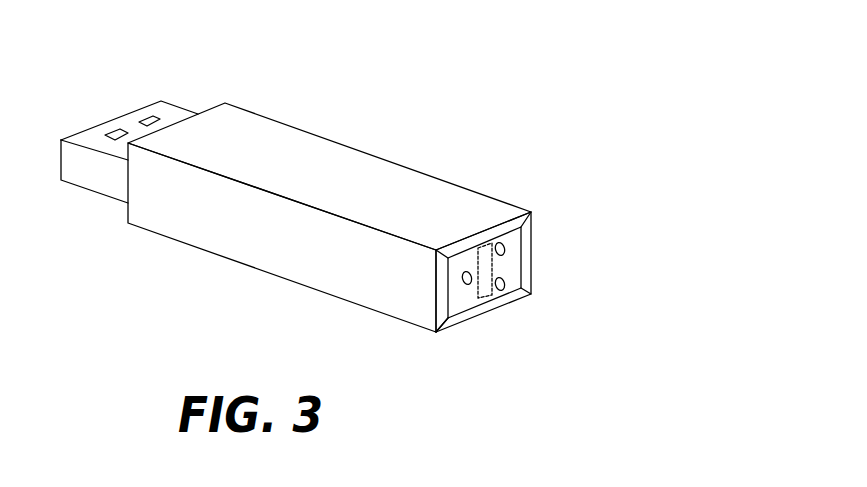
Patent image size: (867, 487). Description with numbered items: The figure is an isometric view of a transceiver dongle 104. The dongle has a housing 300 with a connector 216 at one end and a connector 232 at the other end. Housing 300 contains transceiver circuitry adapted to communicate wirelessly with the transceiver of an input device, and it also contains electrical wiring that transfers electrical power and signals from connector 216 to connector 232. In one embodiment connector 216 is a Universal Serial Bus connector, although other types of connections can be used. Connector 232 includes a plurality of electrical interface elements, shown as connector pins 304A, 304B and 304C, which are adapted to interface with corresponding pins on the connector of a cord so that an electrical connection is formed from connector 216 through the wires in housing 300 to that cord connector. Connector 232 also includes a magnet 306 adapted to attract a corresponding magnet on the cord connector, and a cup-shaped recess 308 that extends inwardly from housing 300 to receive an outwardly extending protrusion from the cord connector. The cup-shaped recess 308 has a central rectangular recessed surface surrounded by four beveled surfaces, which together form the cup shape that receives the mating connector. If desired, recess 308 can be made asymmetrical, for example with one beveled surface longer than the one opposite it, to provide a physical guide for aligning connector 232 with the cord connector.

The transceiver dongle 104 is at (476, 87).
The connector 216 is at (90, 192).
The housing 300 is at (243, 265).
The connector 232 is at (453, 350).
The connector pin 304A is at (461, 277).
The connector pin 304B is at (506, 248).
The connector pin 304C is at (506, 283).
The magnet 306 is at (483, 246).
The cup-shaped recess 308 is at (475, 318).